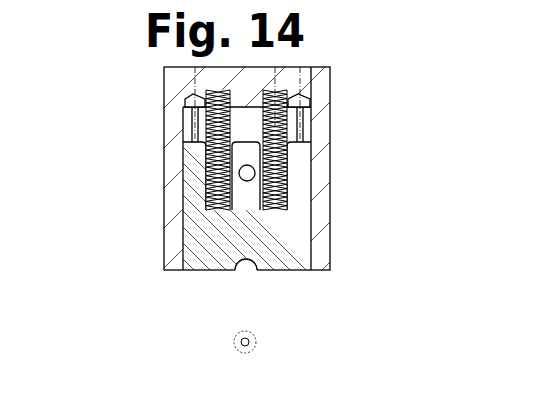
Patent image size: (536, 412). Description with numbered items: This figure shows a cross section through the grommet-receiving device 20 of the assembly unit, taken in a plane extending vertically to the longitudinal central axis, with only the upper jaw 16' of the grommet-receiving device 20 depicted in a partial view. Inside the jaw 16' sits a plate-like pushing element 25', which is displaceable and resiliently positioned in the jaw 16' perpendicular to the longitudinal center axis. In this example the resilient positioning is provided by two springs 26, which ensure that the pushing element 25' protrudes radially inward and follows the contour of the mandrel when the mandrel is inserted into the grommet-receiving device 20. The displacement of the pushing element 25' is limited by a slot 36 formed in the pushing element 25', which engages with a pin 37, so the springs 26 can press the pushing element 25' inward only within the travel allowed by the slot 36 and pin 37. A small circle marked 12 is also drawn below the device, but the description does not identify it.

The grommet-receiving device 20 is at (112, 72).
The upper jaw 16' is at (268, 167).
The pushing element 25' is at (155, 210).
The spring 26 is at (272, 143).
The pin 37 is at (248, 173).
The slot 36 is at (249, 193).
The shaft 12 is at (246, 342).